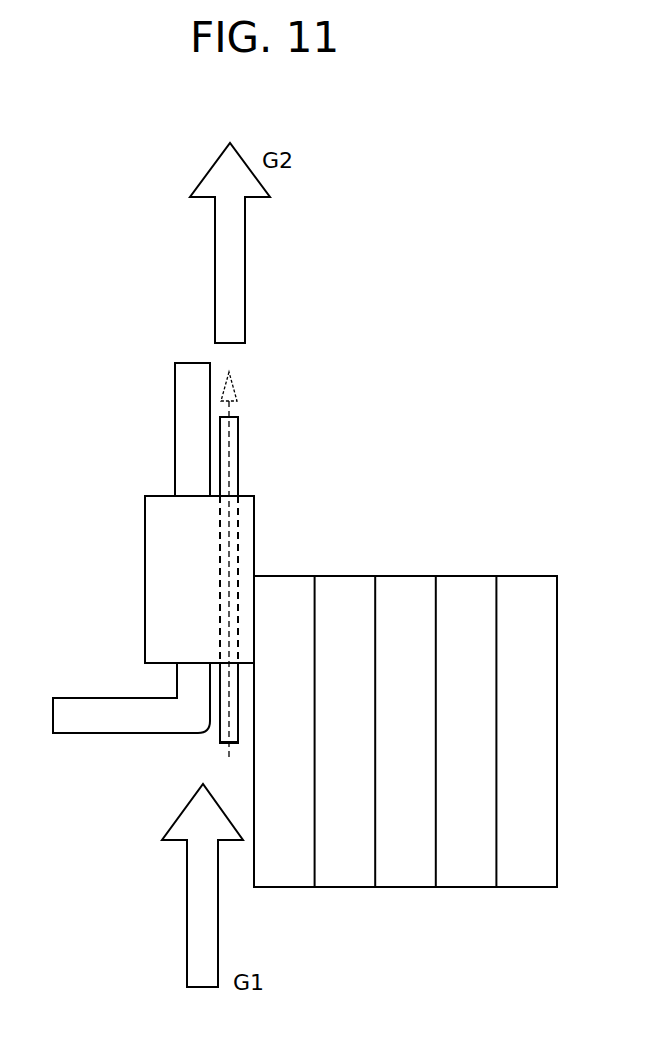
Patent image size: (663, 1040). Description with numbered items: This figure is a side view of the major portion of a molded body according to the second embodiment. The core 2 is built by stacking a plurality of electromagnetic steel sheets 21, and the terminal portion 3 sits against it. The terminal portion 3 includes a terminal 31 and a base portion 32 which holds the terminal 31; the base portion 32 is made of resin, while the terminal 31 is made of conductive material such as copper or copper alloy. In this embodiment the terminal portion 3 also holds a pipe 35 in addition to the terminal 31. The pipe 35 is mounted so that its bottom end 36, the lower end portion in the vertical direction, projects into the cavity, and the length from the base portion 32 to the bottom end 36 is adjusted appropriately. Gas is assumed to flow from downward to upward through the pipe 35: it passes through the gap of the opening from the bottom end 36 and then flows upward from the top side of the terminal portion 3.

The core 2 is at (565, 495).
The electromagnetic steel sheet 21 is at (300, 588).
The terminal portion 3 is at (53, 405).
The terminal 31 is at (188, 428).
The base portion 32 is at (145, 541).
The pipe 35 is at (228, 474).
The bottom end 36 is at (223, 745).